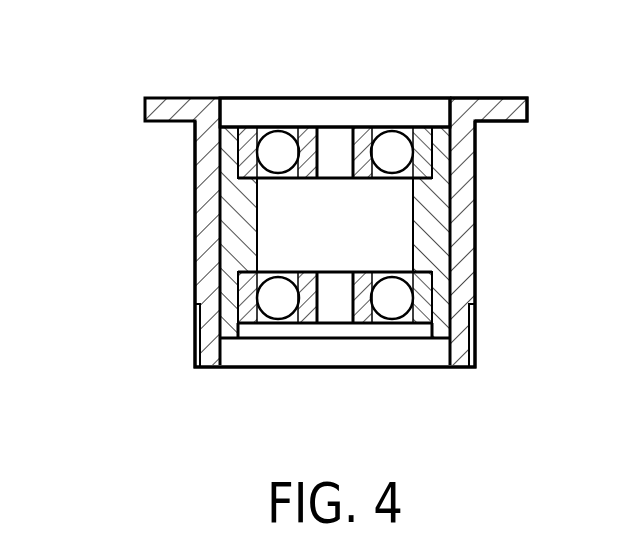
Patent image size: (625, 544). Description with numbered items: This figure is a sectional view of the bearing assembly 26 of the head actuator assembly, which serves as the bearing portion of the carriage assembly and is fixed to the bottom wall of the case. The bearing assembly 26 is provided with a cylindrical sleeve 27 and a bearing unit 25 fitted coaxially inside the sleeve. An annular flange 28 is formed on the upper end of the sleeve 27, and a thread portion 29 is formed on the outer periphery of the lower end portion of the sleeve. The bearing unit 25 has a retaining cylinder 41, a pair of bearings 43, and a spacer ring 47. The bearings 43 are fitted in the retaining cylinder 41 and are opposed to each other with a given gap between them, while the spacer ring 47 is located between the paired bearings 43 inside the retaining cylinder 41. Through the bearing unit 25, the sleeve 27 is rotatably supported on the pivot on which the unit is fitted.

The bearing unit 25 is at (255, 110).
The bearing assembly 26 is at (134, 193).
The cylindrical sleeve 27 is at (476, 254).
The annular flange 28 is at (488, 98).
The thread portion 29 is at (194, 333).
The retaining cylinder 41 is at (440, 155).
The bearings 43 is at (307, 133).
The spacer ring 47 is at (258, 218).